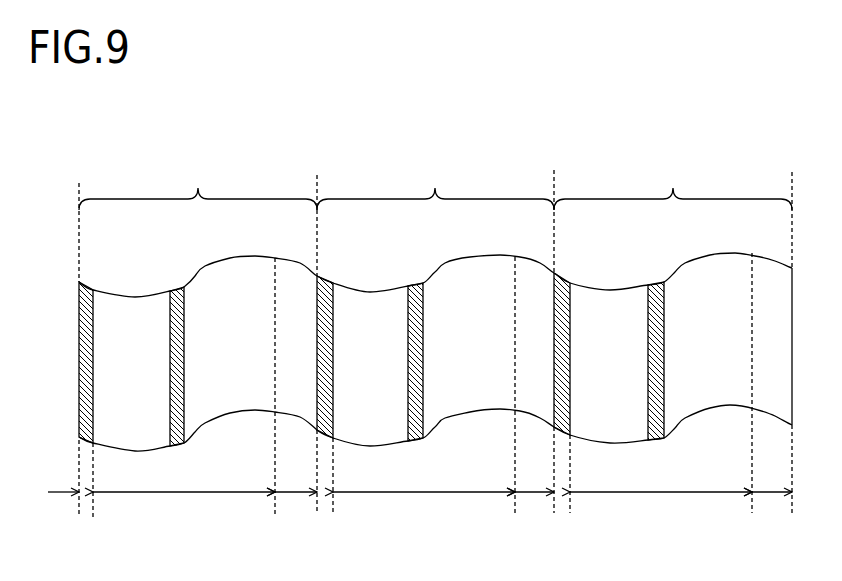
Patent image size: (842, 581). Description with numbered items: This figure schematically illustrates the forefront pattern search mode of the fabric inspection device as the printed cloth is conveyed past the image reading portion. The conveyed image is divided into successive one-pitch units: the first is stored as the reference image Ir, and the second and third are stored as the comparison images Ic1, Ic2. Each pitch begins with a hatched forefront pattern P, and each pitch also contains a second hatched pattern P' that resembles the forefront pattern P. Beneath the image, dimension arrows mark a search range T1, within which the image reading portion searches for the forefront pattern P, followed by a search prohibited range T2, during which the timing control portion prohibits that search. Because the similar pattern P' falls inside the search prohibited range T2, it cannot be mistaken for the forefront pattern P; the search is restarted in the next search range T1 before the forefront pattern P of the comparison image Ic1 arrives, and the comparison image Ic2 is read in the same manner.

The forefront pattern P is at (345, 340).
The pattern similar to the forefront pattern P' is at (448, 378).
The reference image Ir is at (198, 182).
The comparison image Ic1 is at (435, 182).
The comparison image Ic2 is at (673, 182).
The search range T1 is at (416, 513).
The search prohibited range T2 is at (422, 513).